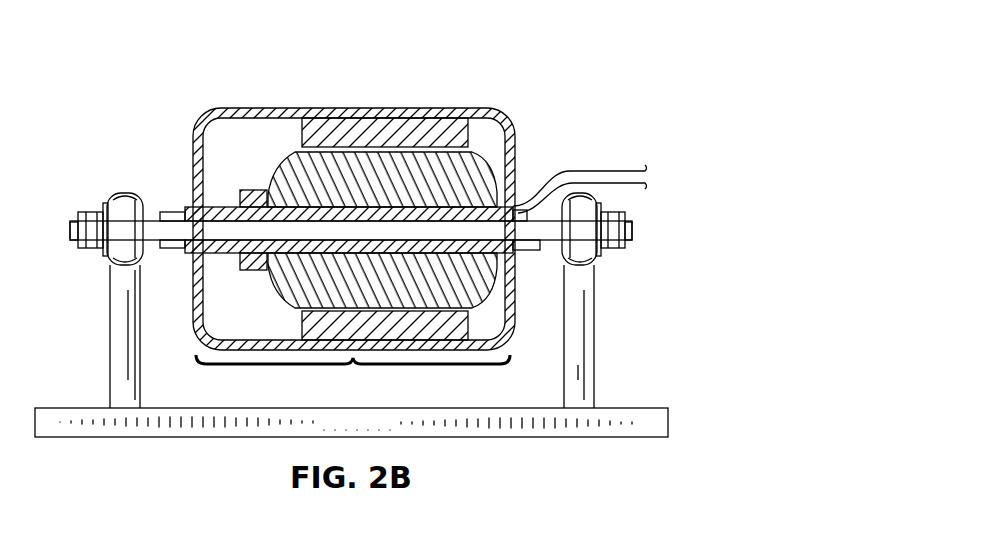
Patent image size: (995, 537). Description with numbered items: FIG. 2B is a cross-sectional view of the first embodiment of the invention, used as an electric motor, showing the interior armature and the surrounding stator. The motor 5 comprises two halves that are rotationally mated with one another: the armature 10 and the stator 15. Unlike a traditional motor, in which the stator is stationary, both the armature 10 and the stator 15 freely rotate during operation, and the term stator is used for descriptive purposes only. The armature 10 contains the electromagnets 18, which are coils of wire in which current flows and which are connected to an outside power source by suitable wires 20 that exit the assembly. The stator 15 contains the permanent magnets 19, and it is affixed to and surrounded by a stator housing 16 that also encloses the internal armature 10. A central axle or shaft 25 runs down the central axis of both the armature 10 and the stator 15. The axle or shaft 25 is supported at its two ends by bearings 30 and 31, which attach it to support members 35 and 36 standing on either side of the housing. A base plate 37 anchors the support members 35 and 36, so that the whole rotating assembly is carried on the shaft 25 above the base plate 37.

The motor 5 is at (157, 58).
The armature 10 is at (272, 195).
The stator 15 is at (431, 108).
The stator housing 16 is at (353, 378).
The electromagnets 18 is at (311, 178).
The permanent magnets 19 is at (343, 117).
The wires 20 is at (654, 159).
The central axle or shaft 25 is at (179, 231).
The bearing 30 is at (112, 200).
The bearing 31 is at (586, 262).
The support member 35 is at (118, 335).
The support member 36 is at (582, 372).
The base plate 37 is at (623, 438).